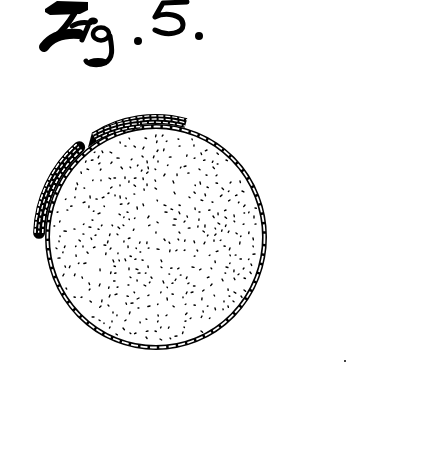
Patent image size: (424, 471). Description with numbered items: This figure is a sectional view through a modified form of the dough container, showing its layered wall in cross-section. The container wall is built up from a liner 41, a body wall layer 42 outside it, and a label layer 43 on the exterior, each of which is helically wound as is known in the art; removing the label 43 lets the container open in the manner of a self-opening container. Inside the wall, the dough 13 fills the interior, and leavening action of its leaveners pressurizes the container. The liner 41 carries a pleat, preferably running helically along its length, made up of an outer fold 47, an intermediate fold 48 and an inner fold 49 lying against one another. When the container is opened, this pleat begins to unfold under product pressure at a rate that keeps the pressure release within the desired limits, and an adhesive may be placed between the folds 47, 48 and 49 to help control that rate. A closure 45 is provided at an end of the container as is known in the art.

The dough 13 is at (133, 320).
The liner 41 is at (207, 136).
The body wall layer 42 is at (169, 117).
The label layer 43 is at (122, 117).
The closure 45 is at (0, 331).
The outer fold 47 is at (80, 160).
The intermediate fold 48 is at (58, 180).
The inner fold 49 is at (42, 208).